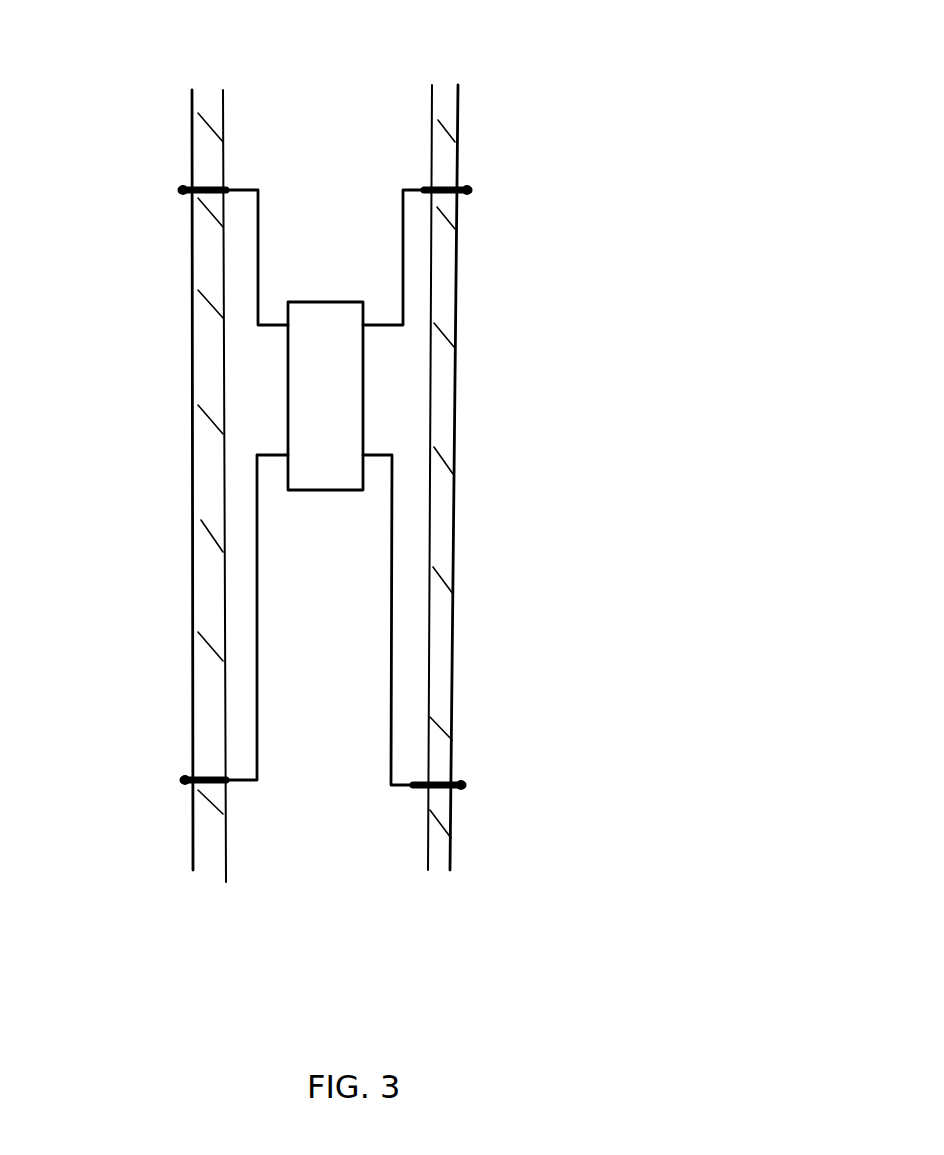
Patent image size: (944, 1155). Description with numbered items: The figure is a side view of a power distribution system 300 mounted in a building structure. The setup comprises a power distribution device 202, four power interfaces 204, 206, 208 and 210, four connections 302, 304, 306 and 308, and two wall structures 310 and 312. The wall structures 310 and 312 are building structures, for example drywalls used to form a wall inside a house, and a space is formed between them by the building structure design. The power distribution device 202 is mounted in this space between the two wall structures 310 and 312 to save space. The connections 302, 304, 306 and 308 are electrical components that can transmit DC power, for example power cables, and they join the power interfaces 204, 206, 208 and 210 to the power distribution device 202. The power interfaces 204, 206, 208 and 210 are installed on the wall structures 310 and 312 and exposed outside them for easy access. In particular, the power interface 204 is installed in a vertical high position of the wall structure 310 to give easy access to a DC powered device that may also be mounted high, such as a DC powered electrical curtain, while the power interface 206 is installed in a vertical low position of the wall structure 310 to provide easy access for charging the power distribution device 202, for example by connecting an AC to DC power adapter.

The power distribution system 300 is at (596, 126).
The power distribution device 202 is at (318, 301).
The power interface 204 is at (178, 193).
The power interface 206 is at (183, 783).
The power interface 208 is at (472, 192).
The power interface 210 is at (465, 786).
The connection 302 is at (257, 652).
The connection 304 is at (386, 722).
The connection 306 is at (263, 190).
The connection 308 is at (397, 190).
The wall structure 310 is at (193, 545).
The wall structure 312 is at (465, 588).